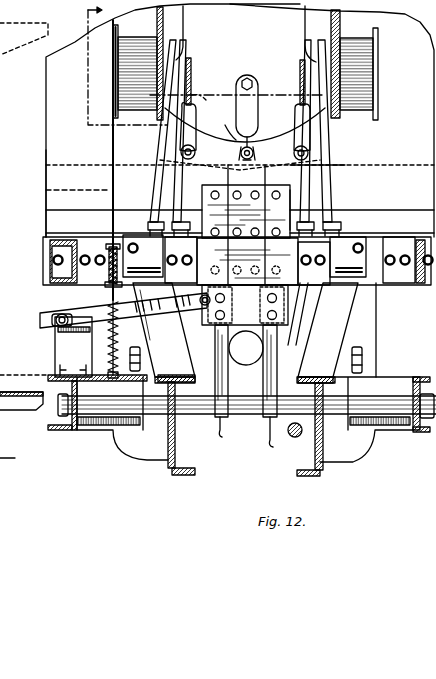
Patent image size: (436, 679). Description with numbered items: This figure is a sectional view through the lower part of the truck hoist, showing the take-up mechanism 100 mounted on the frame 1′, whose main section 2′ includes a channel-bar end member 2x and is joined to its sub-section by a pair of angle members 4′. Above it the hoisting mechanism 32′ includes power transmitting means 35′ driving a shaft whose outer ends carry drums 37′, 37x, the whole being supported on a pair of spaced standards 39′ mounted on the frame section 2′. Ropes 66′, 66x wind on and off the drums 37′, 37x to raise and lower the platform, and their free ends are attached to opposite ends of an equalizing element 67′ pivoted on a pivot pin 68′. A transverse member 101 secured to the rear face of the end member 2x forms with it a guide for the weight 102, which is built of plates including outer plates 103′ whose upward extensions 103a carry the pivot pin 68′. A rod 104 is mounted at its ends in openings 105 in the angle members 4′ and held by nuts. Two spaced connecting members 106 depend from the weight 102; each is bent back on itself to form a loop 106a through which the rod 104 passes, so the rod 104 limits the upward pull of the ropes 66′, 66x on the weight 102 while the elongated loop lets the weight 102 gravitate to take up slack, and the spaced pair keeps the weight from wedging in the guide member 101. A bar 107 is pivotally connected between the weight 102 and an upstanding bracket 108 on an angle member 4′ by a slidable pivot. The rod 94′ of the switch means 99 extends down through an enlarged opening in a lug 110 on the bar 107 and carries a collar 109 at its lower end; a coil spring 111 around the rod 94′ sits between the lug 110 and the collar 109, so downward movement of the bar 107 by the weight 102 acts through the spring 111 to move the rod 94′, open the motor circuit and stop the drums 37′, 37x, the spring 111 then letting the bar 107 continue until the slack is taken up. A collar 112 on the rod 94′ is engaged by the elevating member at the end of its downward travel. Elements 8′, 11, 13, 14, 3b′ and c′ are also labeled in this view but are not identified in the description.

The frame 1′ is at (30, 193).
The main section 2′ is at (43, 243).
The end member 2x is at (378, 283).
The angle members 4′ is at (367, 341).
The shaft 8′ is at (298, 437).
The section line 11 is at (202, 285).
The section line 13 is at (170, 143).
The section line / plate 14 is at (33, 295).
The hoisting mechanism 32′ is at (265, 18).
The power transmitting means 35′ is at (243, 98).
The drum 37′ is at (130, 78).
The drum 37x is at (378, 80).
The standards 39′ is at (158, 180).
The rope 66′ is at (300, 62).
The rope 66x is at (190, 62).
The equalizing element 67′ is at (330, 158).
The pivot pin 68′ is at (254, 146).
The rod 94′ is at (112, 193).
The switch means 99 is at (62, 306).
The take-up mechanism 100 is at (240, 170).
The transverse member 101 is at (320, 278).
The weight 102 is at (290, 208).
The outer plates 103′ is at (174, 176).
The upward extension of outer plates 103a is at (230, 142).
The rod 104 is at (392, 394).
The openings 105 is at (77, 420).
The connecting member 106 is at (258, 352).
The loop 106a is at (258, 441).
The bar 107 is at (163, 320).
The upstanding bracket 108 is at (58, 343).
The collar 109 is at (108, 370).
The lug 110 is at (118, 302).
The coil spring 111 is at (108, 346).
The collar 112 is at (110, 247).
The member 3b′ is at (24, 365).
The member c′ is at (21, 425).